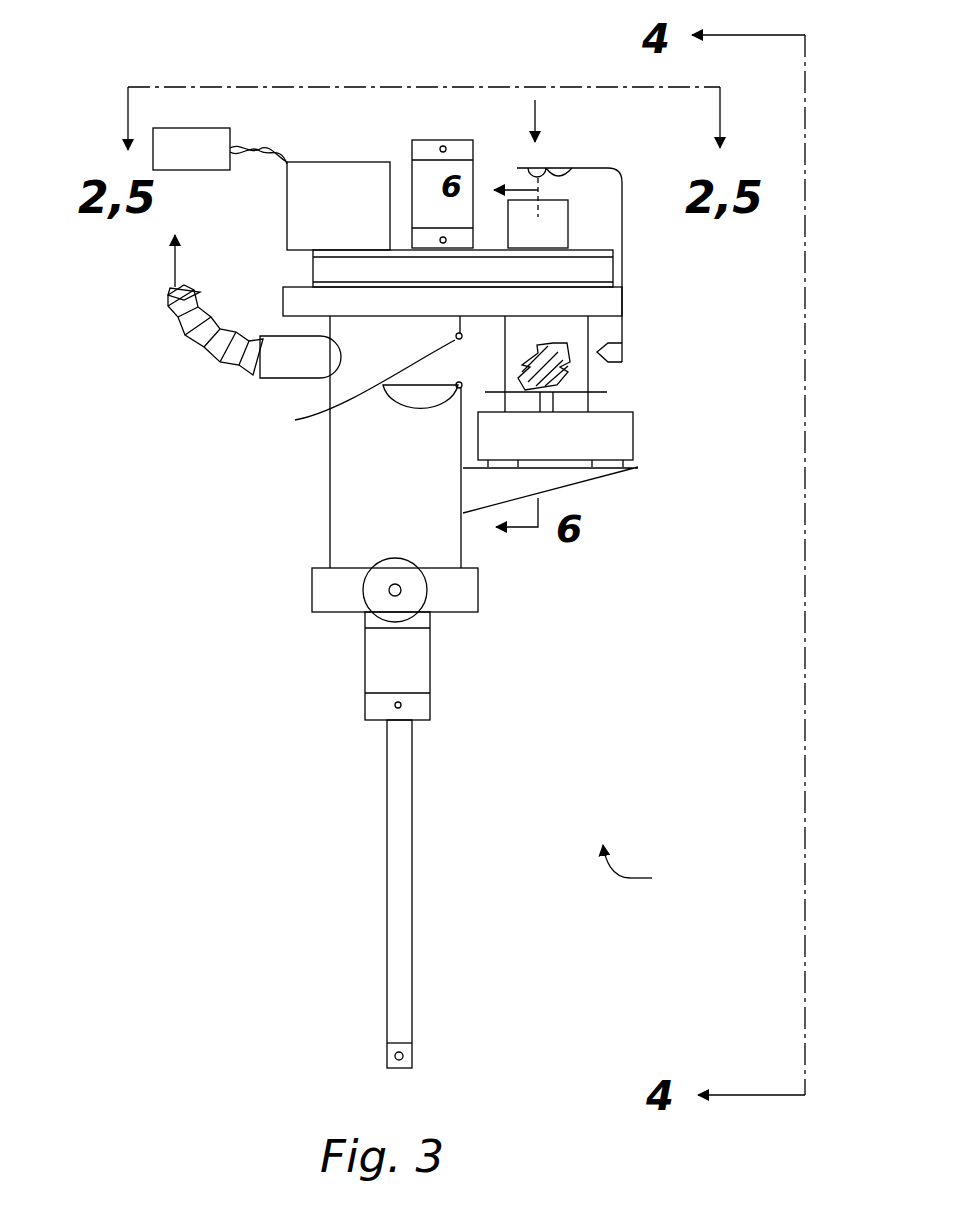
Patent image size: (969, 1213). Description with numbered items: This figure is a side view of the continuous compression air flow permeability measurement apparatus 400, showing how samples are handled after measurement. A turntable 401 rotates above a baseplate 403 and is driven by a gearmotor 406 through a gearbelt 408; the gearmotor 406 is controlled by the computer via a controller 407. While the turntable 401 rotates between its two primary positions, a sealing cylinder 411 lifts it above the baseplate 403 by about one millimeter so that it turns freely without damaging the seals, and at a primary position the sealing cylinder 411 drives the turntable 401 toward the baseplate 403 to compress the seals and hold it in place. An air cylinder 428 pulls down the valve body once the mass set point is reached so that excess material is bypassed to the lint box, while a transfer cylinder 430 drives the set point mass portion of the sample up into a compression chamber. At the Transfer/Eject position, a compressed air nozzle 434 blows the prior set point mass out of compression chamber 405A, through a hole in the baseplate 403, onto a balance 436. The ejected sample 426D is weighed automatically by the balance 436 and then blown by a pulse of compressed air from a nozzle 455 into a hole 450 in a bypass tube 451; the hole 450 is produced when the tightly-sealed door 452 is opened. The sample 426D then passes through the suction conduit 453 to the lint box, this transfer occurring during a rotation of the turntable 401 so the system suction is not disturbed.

The continuous compression air flow permeability measurement apparatus 400 is at (656, 871).
The turntable 401 is at (597, 243).
The baseplate 403 is at (625, 300).
The compression chamber 405A is at (568, 228).
The gearmotor 406 is at (357, 162).
The controller 407 is at (177, 128).
The gearbelt 408 is at (613, 265).
The sealing cylinder 411 is at (443, 140).
The ejected sample 426D is at (562, 382).
The air cylinder 428 is at (430, 657).
The transfer cylinder 430 is at (412, 935).
The compressed air nozzle 434 is at (548, 178).
The balance 436 is at (633, 425).
The hole 450 is at (349, 376).
The bypass tube 451 is at (330, 470).
The door 452 is at (402, 410).
The suction conduit 453 is at (193, 355).
The nozzle 455 is at (625, 330).